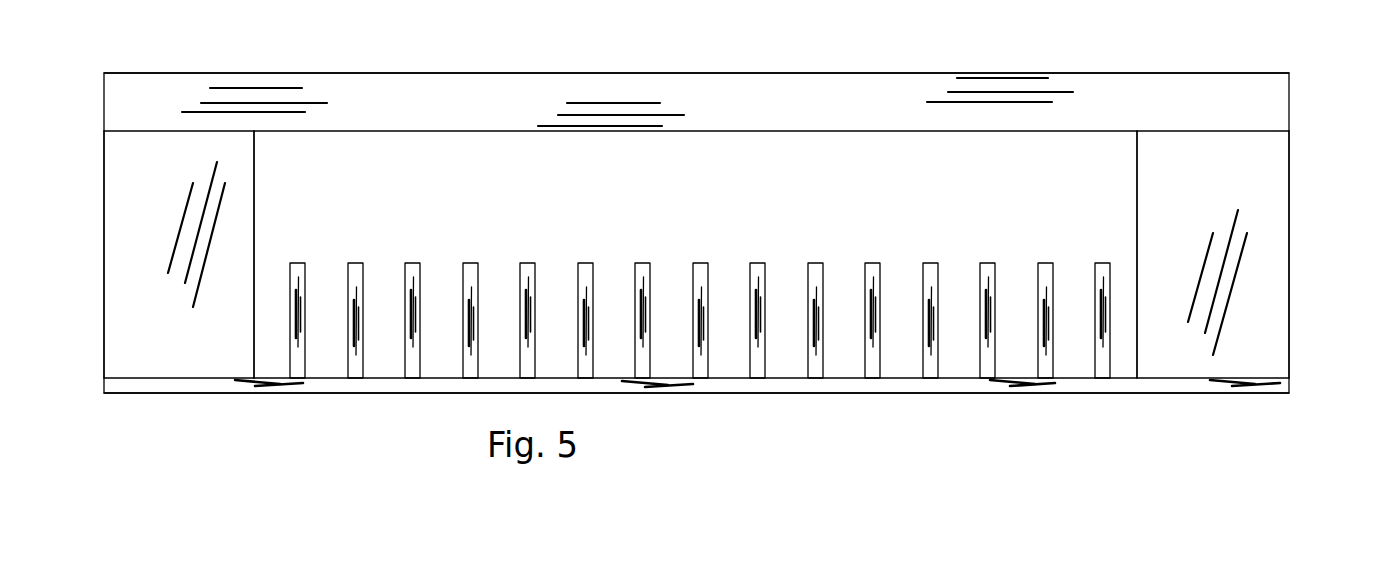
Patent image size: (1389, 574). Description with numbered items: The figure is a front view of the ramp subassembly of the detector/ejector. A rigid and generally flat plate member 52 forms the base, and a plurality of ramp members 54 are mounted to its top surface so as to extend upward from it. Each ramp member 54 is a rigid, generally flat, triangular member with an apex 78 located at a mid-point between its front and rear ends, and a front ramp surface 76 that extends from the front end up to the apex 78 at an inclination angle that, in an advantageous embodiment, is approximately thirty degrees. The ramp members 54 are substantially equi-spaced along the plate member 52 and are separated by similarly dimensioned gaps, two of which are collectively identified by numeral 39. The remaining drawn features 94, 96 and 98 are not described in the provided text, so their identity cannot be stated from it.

The top cover plate 98 is at (900, 102).
The first end region 94 is at (127, 336).
The second end region 96 is at (1245, 173).
The plate member 52 is at (837, 384).
The front ramp surface 76 is at (412, 278).
The ramp members 54 is at (515, 277).
The apex 78 is at (640, 262).
The gaps 39 is at (1015, 260).